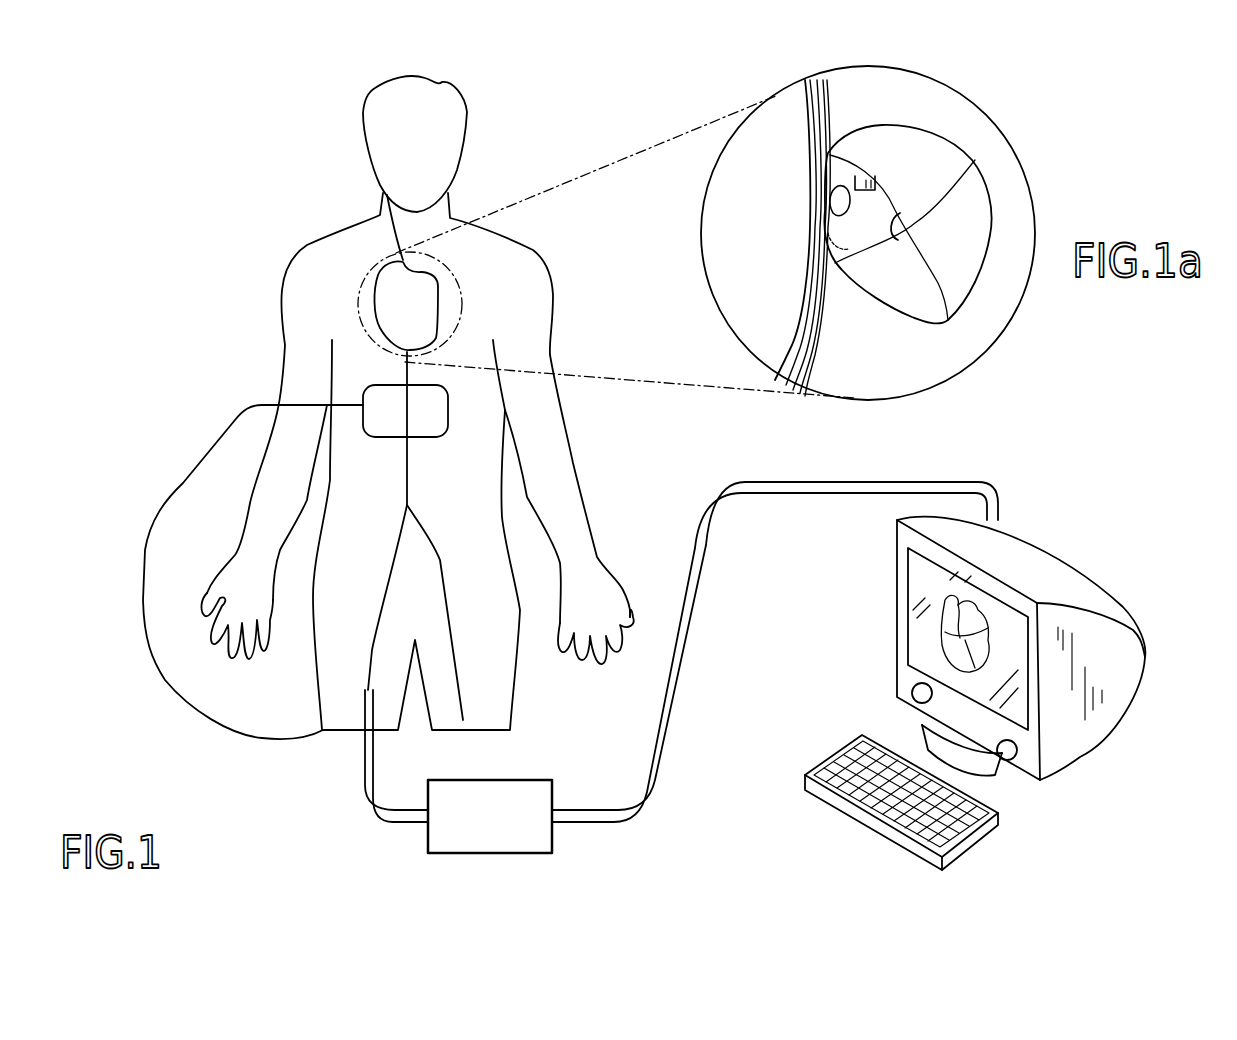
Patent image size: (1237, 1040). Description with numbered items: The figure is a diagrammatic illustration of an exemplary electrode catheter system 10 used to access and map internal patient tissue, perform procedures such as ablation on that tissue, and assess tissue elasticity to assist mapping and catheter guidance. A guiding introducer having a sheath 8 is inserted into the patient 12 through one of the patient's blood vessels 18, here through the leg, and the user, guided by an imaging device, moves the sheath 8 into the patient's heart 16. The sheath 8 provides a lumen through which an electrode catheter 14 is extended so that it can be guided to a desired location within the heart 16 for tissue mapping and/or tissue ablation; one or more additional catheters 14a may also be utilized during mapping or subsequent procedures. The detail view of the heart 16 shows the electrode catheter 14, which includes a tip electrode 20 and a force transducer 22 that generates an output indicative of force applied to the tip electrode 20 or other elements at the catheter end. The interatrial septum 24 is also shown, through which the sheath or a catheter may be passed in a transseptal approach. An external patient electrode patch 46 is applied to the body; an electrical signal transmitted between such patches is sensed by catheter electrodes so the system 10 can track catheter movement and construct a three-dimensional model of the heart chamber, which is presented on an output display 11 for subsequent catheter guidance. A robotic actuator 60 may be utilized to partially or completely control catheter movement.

In FIG. 1, the sheath 8 is at (366, 732).
In FIG. 1A, the sheath 8 is at (813, 295).
In FIG. 1, the electrode catheter system 10 is at (1088, 570).
In FIG. 1, the output display 11 is at (907, 610).
In FIG. 1, the patient 12 is at (292, 256).
In FIG. 1A, the electrode catheter 14 is at (835, 200).
In FIG. 1A, the additional catheter 14a is at (805, 82).
In FIG. 1, the heart 16 is at (440, 311).
In FIG. 1A, the heart 16 is at (885, 303).
In FIG. 1, the blood vessel 18 is at (372, 650).
In FIG. 1A, the tip electrode 20 is at (872, 178).
In FIG. 1A, the force transducer 22 is at (859, 178).
In FIG. 1A, the interatrial septum 24 is at (898, 238).
In FIG. 1, the external patient electrode patch 46 is at (436, 437).
In FIG. 1, the robotic actuator 60 is at (502, 829).